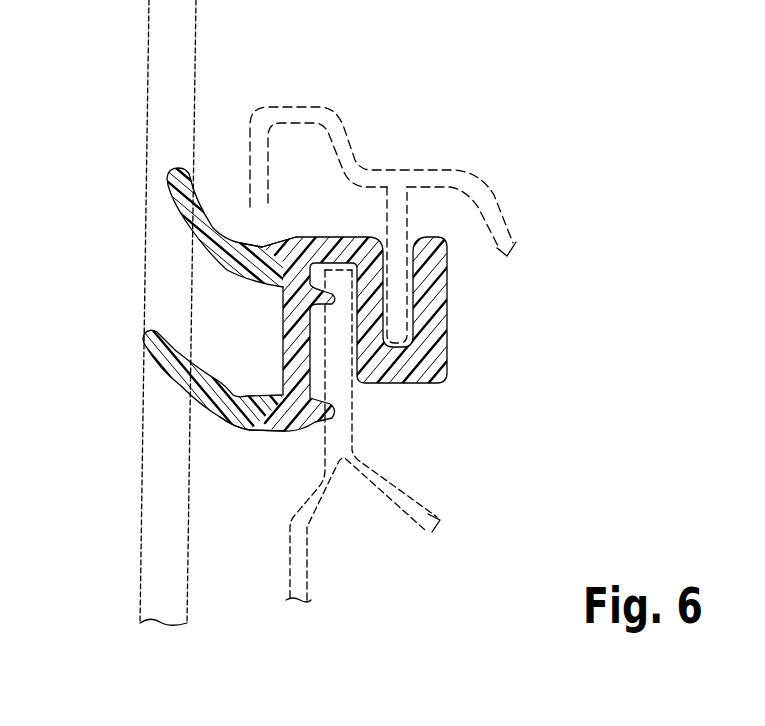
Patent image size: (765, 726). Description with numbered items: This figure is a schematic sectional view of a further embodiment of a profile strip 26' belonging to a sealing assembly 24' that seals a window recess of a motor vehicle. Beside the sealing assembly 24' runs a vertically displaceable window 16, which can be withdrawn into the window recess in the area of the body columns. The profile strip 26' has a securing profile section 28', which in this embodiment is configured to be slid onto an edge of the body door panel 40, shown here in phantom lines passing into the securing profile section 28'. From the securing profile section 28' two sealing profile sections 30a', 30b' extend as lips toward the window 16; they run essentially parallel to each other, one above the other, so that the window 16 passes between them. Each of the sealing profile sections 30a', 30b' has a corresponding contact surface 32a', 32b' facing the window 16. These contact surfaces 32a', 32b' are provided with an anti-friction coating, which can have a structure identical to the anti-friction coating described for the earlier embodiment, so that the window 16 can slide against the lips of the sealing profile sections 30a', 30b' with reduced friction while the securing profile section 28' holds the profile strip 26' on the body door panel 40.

The window 16 is at (165, 75).
The sealing assembly 24' is at (361, 355).
The profile strip 26' is at (379, 223).
The securing profile section 28' is at (363, 436).
The sealing profile section 30a' is at (211, 227).
The sealing profile section 30b' is at (204, 377).
The contact surface 32a' is at (174, 274).
The contact surface 32b' is at (167, 437).
The body door panel 40 is at (495, 200).